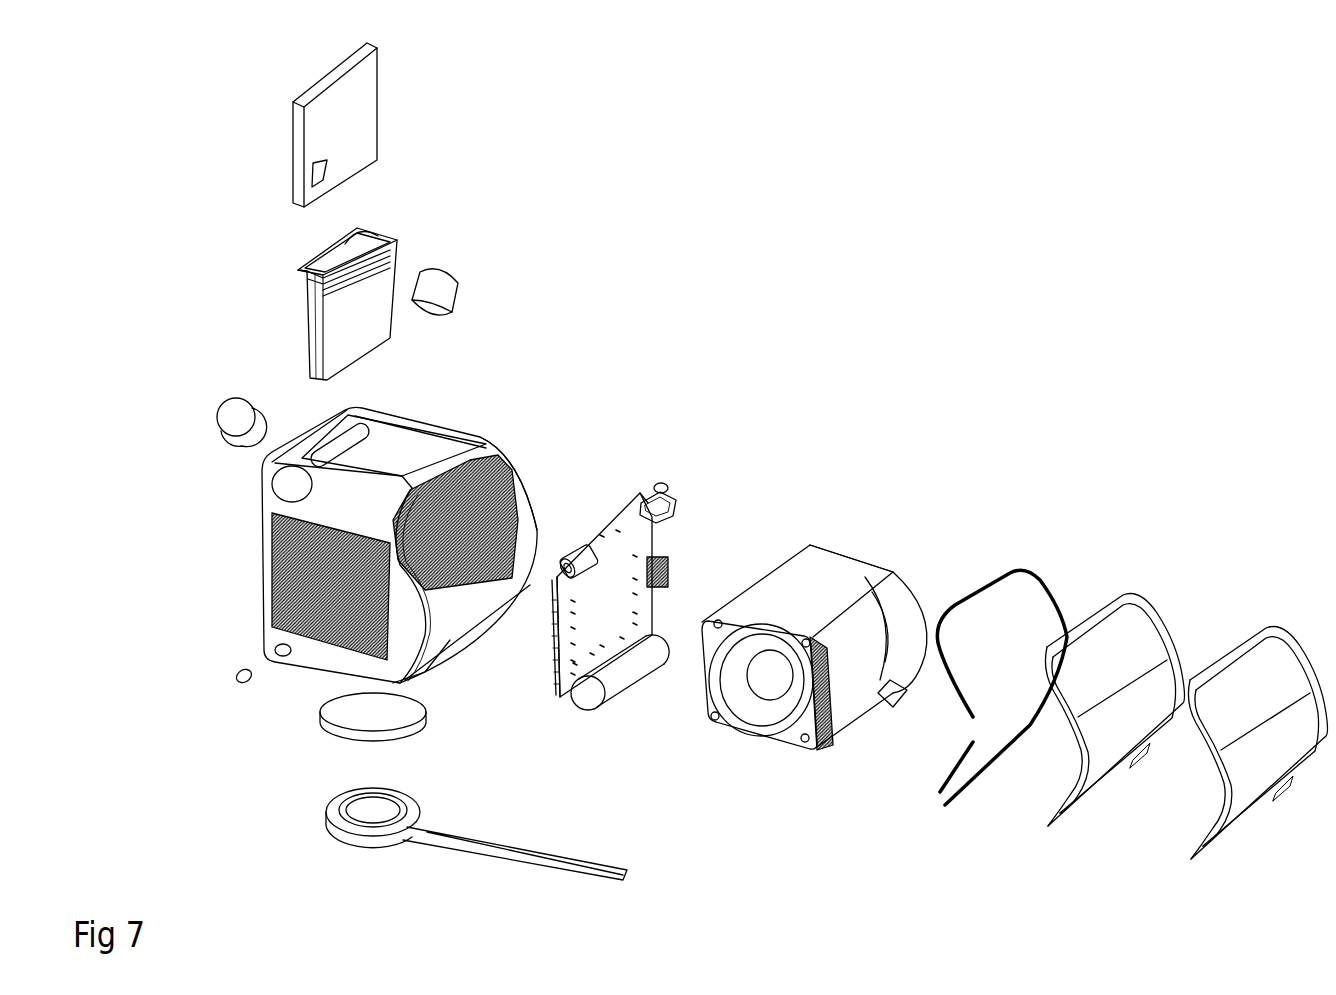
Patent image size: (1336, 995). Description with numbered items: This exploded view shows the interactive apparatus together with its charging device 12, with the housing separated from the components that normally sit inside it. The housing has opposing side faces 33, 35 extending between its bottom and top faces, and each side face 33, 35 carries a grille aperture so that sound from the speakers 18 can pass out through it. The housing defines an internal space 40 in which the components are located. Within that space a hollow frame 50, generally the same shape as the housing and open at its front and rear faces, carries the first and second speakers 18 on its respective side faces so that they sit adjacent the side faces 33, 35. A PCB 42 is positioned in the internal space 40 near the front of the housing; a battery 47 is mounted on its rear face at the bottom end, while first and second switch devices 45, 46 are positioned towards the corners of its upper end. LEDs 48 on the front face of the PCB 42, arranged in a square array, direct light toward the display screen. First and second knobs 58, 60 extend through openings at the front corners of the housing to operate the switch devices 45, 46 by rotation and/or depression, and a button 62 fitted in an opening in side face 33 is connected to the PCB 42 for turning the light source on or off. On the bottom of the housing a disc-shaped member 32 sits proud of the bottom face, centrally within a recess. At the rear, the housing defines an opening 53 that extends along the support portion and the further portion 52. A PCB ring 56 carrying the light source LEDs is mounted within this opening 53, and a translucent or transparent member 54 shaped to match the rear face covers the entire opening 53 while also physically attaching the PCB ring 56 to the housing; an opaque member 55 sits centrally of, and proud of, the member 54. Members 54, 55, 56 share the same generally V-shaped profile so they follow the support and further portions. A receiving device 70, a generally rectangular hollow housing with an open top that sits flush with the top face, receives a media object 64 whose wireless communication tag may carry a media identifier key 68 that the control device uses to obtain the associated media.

The charging device 12 is at (428, 847).
The speakers 18 is at (753, 737).
The member 32 is at (333, 743).
The side face 33 is at (267, 625).
The side face 35 is at (520, 497).
The internal space 40 is at (447, 617).
The PCB 42 is at (618, 505).
The first switch device 45 is at (568, 565).
The second switch device 46 is at (670, 495).
The battery 47 is at (641, 690).
The LEDs 48 is at (552, 652).
The hollow frame 50 is at (858, 581).
The further portion 52 is at (490, 456).
The opening 53 is at (405, 680).
The translucent or transparent member 54 is at (1073, 813).
The opaque member 55 is at (1260, 820).
The PCB ring 56 is at (945, 800).
The first knob 58 is at (460, 283).
The second knob 60 is at (217, 420).
The button 62 is at (236, 684).
The media object 64 is at (365, 117).
The media identifier key 68 is at (307, 177).
The receiving device 70 is at (310, 342).